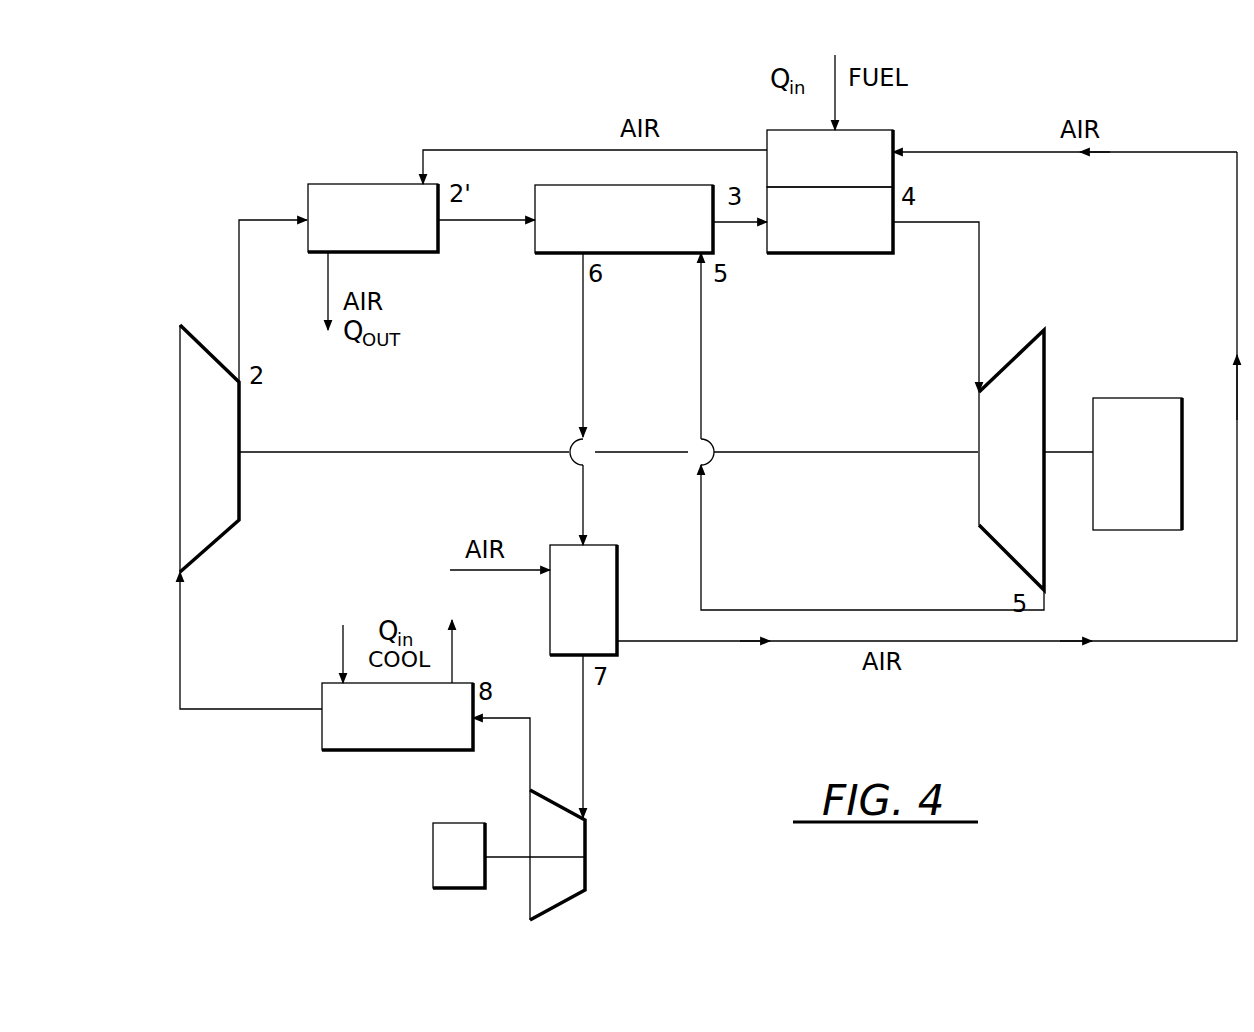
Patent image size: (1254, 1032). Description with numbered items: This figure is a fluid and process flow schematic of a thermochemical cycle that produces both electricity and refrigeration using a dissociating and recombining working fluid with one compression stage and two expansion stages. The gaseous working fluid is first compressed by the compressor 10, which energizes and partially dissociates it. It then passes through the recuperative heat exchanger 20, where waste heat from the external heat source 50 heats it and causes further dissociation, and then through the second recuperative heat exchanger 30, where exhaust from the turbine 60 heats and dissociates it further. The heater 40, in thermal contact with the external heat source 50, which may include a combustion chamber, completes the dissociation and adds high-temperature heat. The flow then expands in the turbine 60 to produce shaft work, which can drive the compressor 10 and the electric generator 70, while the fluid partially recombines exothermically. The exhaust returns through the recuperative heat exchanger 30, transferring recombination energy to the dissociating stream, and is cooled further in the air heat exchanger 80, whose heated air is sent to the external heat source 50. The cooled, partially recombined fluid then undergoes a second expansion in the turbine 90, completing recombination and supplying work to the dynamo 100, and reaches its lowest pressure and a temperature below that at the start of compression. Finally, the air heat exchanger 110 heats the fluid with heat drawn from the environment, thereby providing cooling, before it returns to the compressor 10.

The compressor 10 is at (180, 470).
The recuperative heat exchanger 20 is at (322, 184).
The second recuperative heat exchanger 30 is at (547, 253).
The heater 40 is at (868, 253).
The external heat source 50 is at (897, 136).
The turbine 60 is at (1046, 368).
The electric generator 70 is at (1183, 415).
The air heat exchanger 80 is at (618, 558).
The turbine 90 is at (587, 868).
The dynamo 100 is at (433, 860).
The air heat exchanger 110 is at (380, 750).